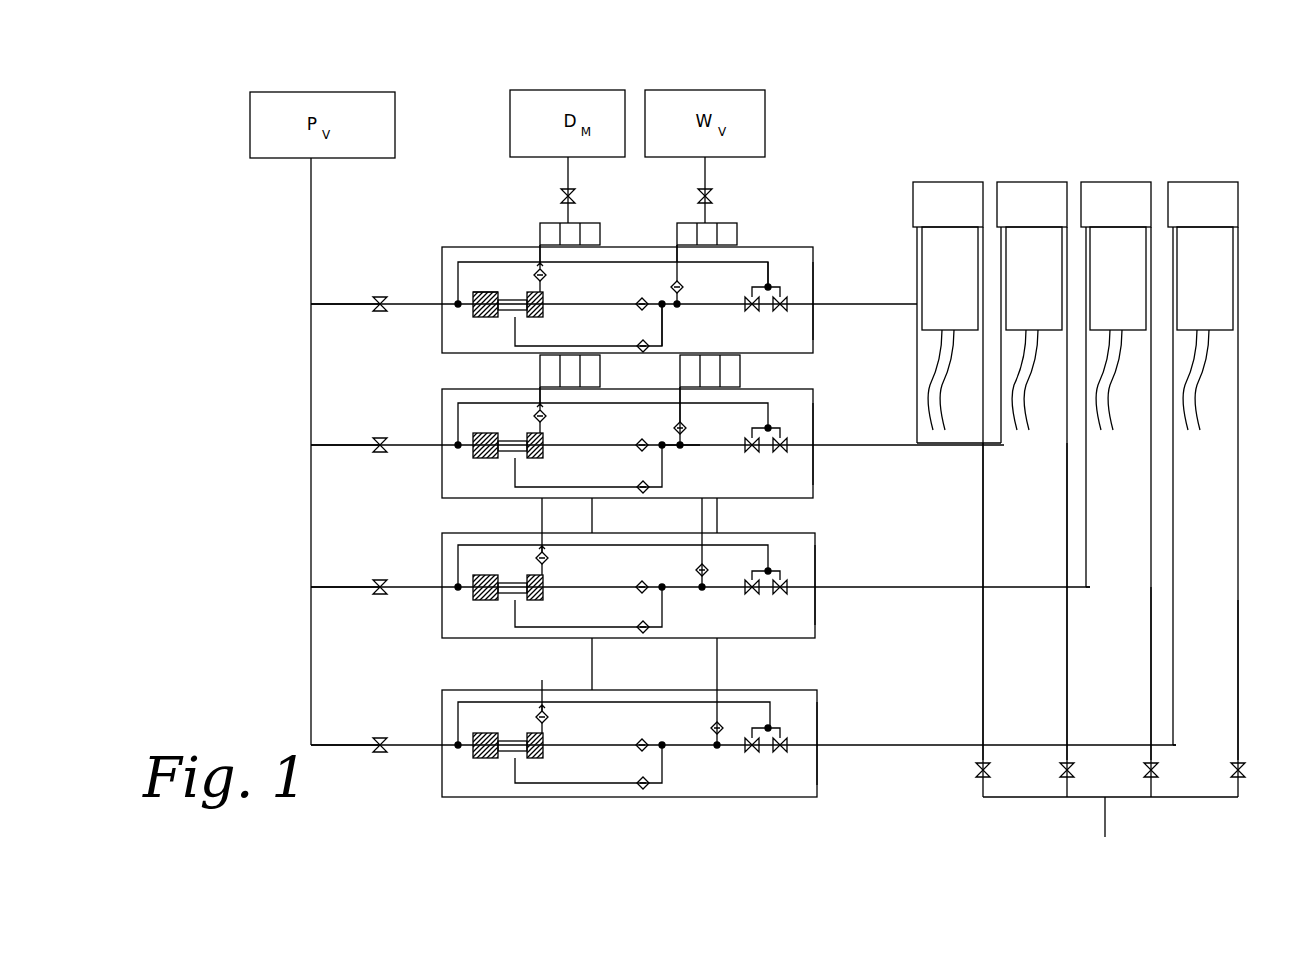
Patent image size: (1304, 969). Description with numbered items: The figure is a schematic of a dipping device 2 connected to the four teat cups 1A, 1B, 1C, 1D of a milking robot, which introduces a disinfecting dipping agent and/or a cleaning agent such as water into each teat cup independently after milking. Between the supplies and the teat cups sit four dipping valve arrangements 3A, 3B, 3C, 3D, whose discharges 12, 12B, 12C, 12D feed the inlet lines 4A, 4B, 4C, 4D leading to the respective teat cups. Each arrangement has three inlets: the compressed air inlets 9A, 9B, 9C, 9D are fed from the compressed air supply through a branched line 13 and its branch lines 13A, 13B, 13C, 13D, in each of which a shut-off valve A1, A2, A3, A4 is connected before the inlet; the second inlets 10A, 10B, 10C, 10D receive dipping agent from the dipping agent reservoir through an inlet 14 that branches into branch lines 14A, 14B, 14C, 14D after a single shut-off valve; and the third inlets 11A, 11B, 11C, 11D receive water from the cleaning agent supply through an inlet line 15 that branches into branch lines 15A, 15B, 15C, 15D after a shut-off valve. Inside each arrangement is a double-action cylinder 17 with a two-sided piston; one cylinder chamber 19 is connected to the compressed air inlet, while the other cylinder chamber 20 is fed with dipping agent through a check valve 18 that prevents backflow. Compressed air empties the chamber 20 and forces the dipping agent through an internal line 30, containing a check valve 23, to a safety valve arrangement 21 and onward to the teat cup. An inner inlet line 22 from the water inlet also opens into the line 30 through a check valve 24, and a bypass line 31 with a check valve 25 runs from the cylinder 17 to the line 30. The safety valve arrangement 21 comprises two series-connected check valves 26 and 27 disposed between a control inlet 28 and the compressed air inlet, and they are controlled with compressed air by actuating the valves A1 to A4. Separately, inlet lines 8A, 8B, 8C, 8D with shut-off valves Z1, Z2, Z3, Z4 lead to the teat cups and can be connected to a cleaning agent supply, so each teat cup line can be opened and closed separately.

The dipping device 2 is at (842, 190).
The branched line 13 is at (313, 192).
The branch line 13A is at (325, 300).
The branch line 13B is at (325, 441).
The branch line 13C is at (325, 583).
The branch line 13D is at (325, 741).
The shut-off valve A1 is at (383, 292).
The shut-off valve A2 is at (383, 433).
The shut-off valve A3 is at (383, 575).
The shut-off valve A4 is at (383, 733).
The inlet 9A is at (442, 300).
The inlet 9B is at (442, 441).
The inlet 9C is at (442, 583).
The inlet 9D is at (442, 741).
The second inlet 10A is at (540, 247).
The second inlet 10B is at (540, 389).
The second inlet 10C is at (540, 535).
The second inlet 10D is at (540, 692).
The third inlet 11A is at (677, 247).
The third inlet 11B is at (680, 389).
The third inlet 11C is at (702, 535).
The third inlet 11D is at (717, 692).
The inlet 14 is at (578, 190).
The inlet line 15 is at (715, 190).
The branch line 14A is at (540, 230).
The branch line 14B is at (560, 371).
The branch line 14C is at (560, 513).
The branch line 14D is at (592, 662).
The branch line 15A is at (677, 235).
The branch line 15B is at (690, 372).
The branch line 15C is at (702, 512).
The branch line 15D is at (712, 658).
The cylinder 17 is at (488, 320).
The check valve 18 is at (548, 275).
The cylinder chamber 19 is at (478, 292).
The cylinder chamber 20 is at (560, 301).
The safety valve arrangement 21 is at (786, 283).
The inner inlet line 22 is at (671, 287).
The check valve 23 is at (639, 300).
The check valve 24 is at (690, 283).
The check valve 25 is at (639, 343).
The check valve 26 is at (752, 320).
The check valve 27 is at (779, 315).
The control inlet 28 is at (770, 280).
The internal line 30 is at (700, 312).
The bypass line 31 is at (556, 335).
The discharge 12 is at (813, 315).
The discharge 12B is at (813, 458).
The discharge 12C is at (815, 600).
The discharge 12D is at (817, 760).
The dipping valve arrangement 3A is at (813, 247).
The dipping valve arrangement 3B is at (813, 389).
The dipping valve arrangement 3C is at (815, 533).
The dipping valve arrangement 3D is at (817, 690).
The inlet line 4A is at (870, 302).
The inlet line 4B is at (898, 443).
The inlet line 4C is at (936, 585).
The inlet line 4D is at (932, 743).
The teat cup 1A is at (948, 182).
The teat cup 1B is at (1033, 182).
The teat cup 1C is at (1118, 182).
The teat cup 1D is at (1203, 182).
The inlet line 8A is at (985, 530).
The inlet line 8B is at (1067, 648).
The inlet line 8C is at (1151, 665).
The inlet line 8D is at (1238, 690).
The shut-off valve Z1 is at (972, 771).
The shut-off valve Z2 is at (1056, 771).
The shut-off valve Z3 is at (1140, 771).
The shut-off valve Z4 is at (1227, 771).